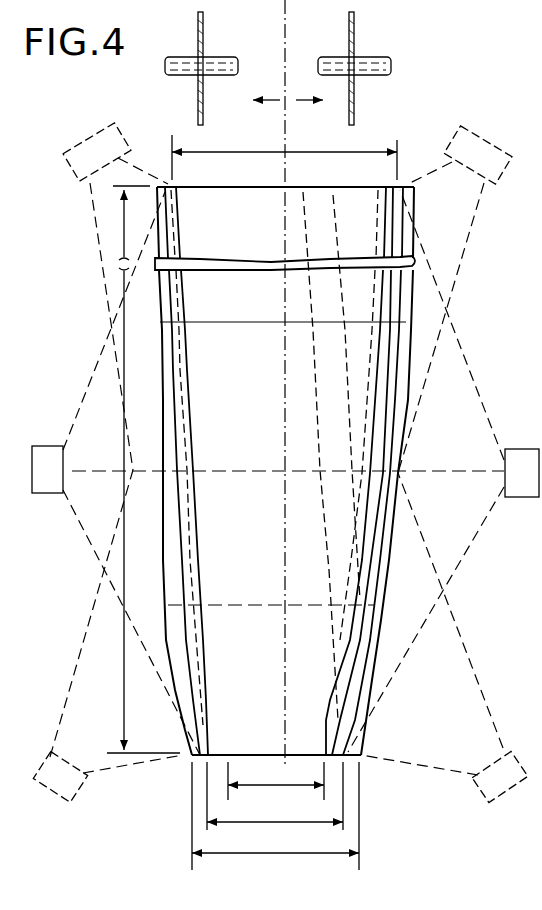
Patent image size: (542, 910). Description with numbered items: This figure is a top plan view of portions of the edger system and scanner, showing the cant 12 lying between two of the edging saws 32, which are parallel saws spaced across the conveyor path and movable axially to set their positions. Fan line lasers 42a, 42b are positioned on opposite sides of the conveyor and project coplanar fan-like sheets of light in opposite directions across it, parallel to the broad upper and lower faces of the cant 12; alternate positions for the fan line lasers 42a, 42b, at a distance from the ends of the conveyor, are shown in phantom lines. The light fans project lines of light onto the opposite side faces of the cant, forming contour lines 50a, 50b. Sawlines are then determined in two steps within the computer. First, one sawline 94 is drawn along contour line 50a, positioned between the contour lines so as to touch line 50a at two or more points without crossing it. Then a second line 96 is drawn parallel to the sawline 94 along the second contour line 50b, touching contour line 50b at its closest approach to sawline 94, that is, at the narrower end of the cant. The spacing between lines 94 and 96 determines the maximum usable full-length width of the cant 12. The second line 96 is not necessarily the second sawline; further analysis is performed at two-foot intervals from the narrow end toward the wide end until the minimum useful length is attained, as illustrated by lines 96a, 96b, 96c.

The cant 12 is at (392, 557).
The saws 32 is at (204, 39).
The fan line laser 42a is at (91, 136).
The fan line laser 42b is at (497, 172).
The contour line 50a is at (183, 522).
The contour line 50b is at (373, 510).
The sawline 94 is at (185, 422).
The second line 96 is at (329, 605).
The line 96a is at (350, 440).
The line 96b is at (373, 415).
The line 96c is at (412, 277).